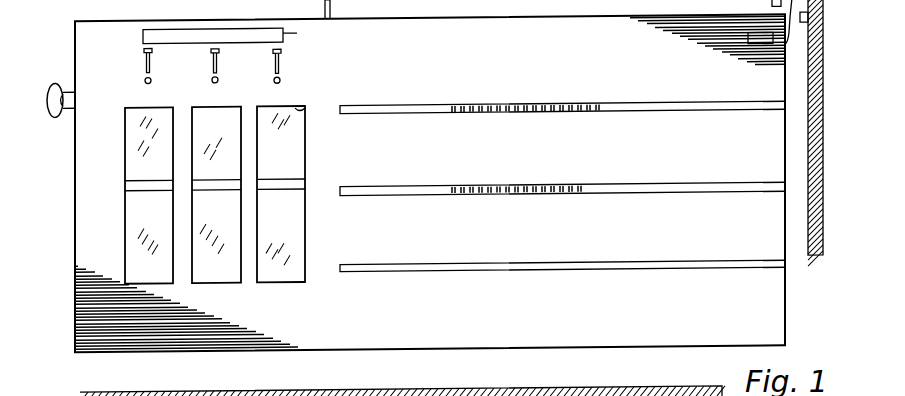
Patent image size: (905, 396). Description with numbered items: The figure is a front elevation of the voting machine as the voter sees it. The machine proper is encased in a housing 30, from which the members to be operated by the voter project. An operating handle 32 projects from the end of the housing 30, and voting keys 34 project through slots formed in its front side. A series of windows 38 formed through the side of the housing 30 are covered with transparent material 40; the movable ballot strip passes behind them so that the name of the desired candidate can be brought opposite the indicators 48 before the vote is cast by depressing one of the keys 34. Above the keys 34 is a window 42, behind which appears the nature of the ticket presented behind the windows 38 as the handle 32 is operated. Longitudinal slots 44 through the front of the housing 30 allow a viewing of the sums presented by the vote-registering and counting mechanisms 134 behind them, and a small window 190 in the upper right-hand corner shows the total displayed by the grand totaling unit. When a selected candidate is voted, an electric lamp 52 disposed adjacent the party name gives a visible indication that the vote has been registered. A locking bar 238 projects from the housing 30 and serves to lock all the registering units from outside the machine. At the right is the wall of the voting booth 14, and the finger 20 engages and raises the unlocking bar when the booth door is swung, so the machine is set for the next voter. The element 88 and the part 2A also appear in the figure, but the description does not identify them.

The housing 30 is at (430, 183).
The finger 20 is at (786, 64).
The voting booth 14 is at (823, 262).
The hinge 2A is at (808, 26).
The locking bar 238 is at (330, 8).
The operating handle 32 is at (63, 84).
The window 42 is at (143, 37).
The ticket bar 88 is at (300, 30).
The voting keys 34 is at (273, 54).
The electric lamp 52 is at (274, 83).
The windows 38 is at (192, 139).
The indicators 48 is at (252, 188).
The transparent material 40 is at (272, 285).
The longitudinal slots 44 is at (640, 268).
The vote-registering and counting mechanism 134 is at (505, 208).
The small window 190 is at (752, 51).